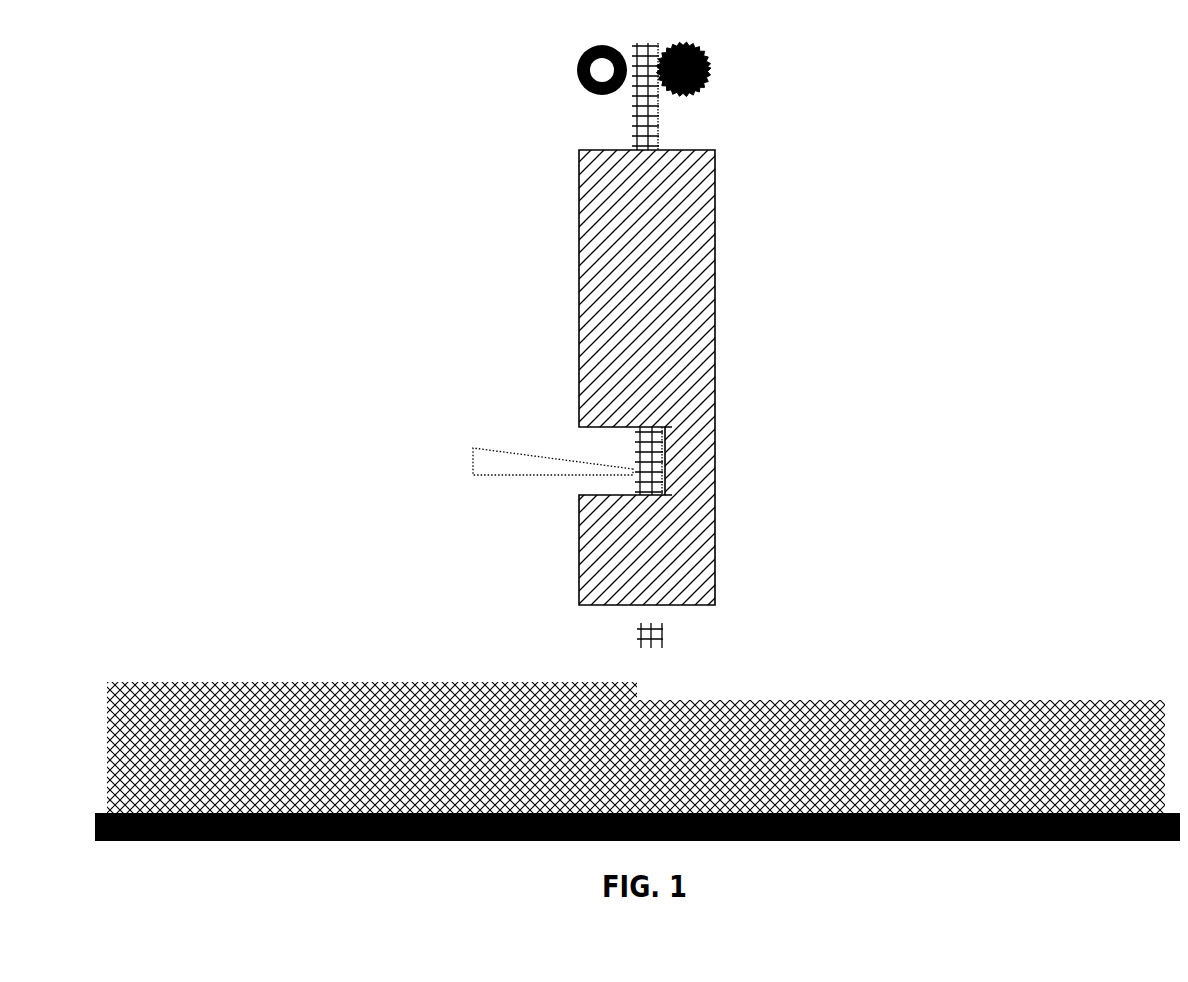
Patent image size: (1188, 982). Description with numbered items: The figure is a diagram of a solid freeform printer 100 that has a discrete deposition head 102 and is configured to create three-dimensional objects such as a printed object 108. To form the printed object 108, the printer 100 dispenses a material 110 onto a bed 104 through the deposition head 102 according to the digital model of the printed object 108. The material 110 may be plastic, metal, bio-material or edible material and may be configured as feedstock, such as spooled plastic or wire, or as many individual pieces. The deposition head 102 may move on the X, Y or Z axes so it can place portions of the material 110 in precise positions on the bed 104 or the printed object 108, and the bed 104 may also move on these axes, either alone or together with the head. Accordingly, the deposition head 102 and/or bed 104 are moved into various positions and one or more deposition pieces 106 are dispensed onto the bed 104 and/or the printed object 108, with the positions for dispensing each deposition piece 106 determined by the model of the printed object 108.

The solid freeform printer 100 is at (1063, 85).
The discrete deposition head 102 is at (770, 150).
The bed 104 is at (637, 827).
The deposition piece 106 is at (628, 636).
The printed object 108 is at (772, 692).
The material 110 is at (618, 138).